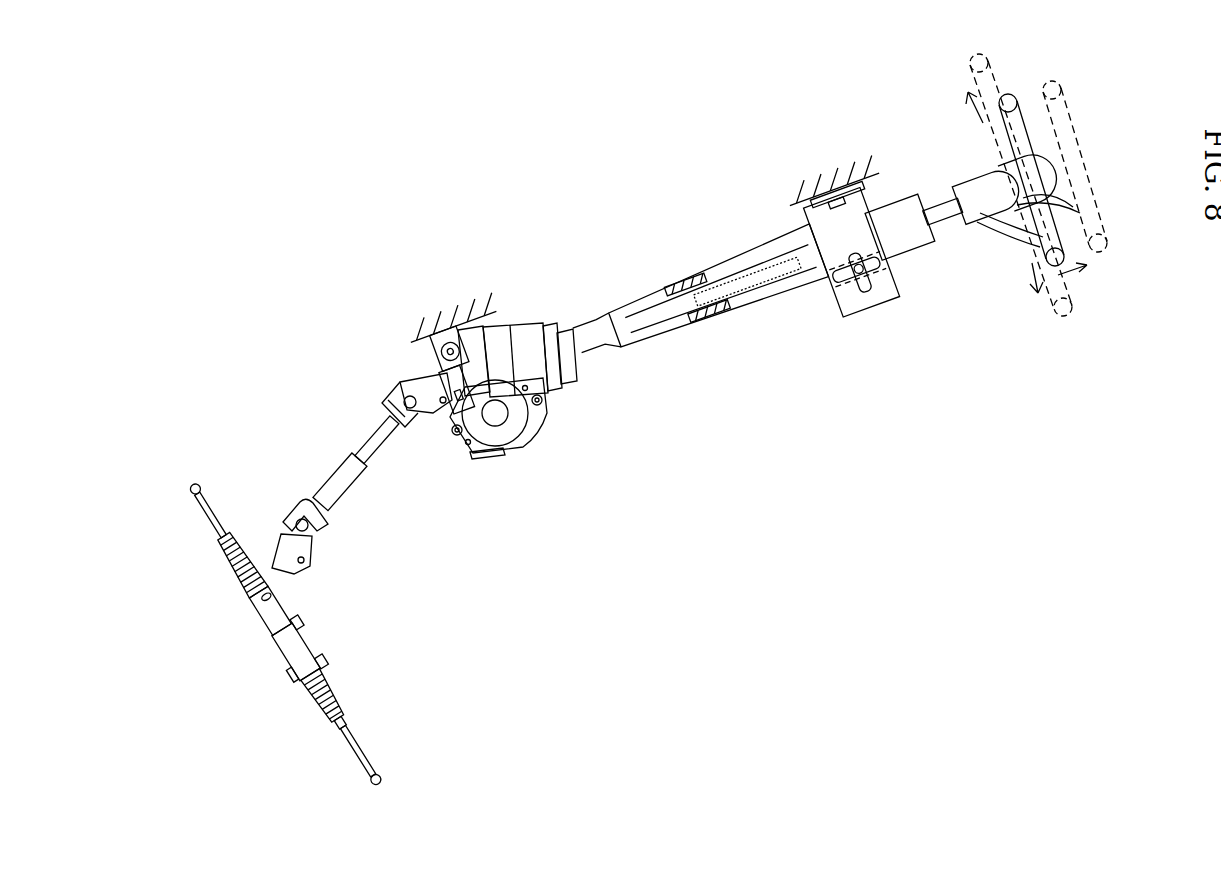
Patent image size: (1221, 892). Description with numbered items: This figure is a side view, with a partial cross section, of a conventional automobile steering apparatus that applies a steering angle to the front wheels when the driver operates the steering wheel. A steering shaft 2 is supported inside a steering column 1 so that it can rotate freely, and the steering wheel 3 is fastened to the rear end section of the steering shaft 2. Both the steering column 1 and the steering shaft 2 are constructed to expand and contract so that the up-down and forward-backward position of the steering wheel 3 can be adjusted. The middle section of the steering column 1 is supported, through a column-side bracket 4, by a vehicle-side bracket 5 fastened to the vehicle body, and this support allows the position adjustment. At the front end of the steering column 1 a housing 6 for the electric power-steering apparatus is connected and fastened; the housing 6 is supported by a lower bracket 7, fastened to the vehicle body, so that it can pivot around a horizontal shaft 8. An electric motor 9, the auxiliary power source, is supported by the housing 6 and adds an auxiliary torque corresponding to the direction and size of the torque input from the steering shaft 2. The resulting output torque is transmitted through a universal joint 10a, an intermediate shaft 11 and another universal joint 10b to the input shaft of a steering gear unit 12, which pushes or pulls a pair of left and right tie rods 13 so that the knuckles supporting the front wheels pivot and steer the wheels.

The steering column 1 is at (683, 273).
The steering shaft 2 is at (943, 213).
The steering wheel 3 is at (1017, 128).
The column-side bracket 4 is at (838, 303).
The vehicle-side bracket 5 is at (878, 172).
The housing 6 is at (528, 357).
The lower bracket 7 is at (443, 333).
The horizontal shaft 8 is at (425, 357).
The electric motor 9 is at (513, 427).
The universal joint 10a is at (427, 407).
The universal joint 10b is at (312, 538).
The intermediate shaft 11 is at (343, 477).
The steering gear unit 12 is at (290, 647).
The tie rods 13 is at (212, 510).